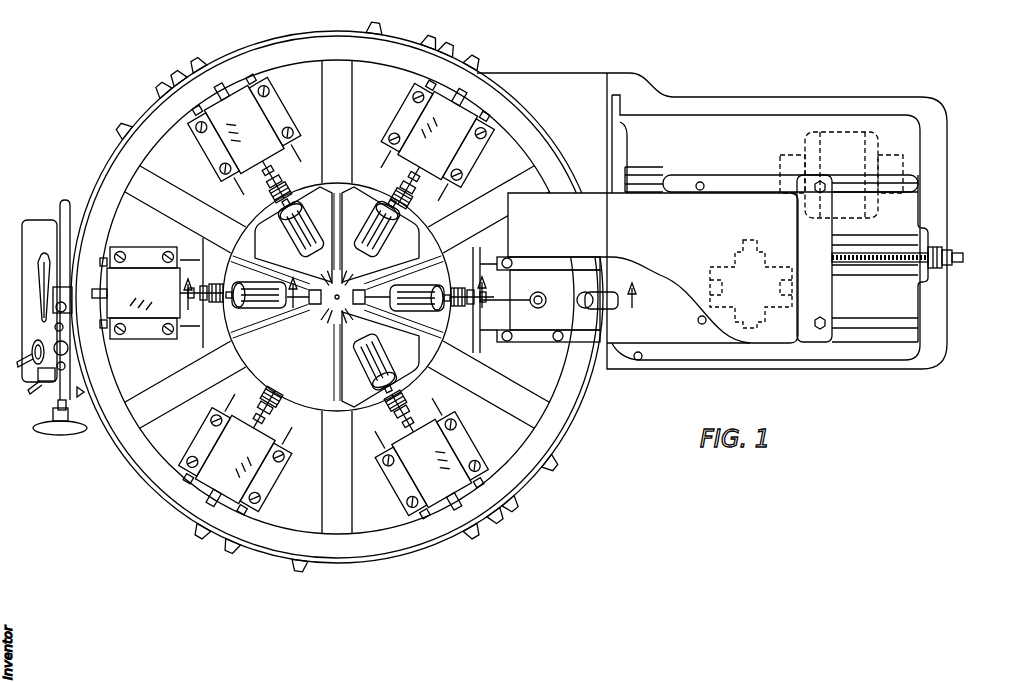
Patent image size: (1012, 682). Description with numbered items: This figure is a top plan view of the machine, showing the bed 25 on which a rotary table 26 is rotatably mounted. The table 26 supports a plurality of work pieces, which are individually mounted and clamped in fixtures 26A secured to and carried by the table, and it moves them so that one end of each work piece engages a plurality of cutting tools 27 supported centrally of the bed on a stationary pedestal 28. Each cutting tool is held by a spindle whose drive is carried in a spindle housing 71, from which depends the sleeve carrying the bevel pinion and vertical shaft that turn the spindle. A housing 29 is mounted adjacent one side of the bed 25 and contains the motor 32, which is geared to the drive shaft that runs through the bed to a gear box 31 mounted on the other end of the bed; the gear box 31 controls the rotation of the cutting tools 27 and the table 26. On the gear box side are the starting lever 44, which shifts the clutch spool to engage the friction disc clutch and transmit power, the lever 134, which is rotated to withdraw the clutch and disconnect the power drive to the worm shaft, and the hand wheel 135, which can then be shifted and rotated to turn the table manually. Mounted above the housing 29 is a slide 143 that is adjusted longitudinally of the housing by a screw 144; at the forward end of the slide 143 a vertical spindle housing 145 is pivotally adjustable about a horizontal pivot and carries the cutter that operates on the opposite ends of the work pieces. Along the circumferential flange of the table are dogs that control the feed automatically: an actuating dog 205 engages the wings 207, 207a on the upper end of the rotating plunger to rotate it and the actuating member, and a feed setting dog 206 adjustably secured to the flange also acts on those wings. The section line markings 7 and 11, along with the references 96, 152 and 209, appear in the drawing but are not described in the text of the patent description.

The bed 25 is at (585, 78).
The table 26 is at (572, 410).
The fixtures 26A is at (223, 141).
The cutting tools 27 is at (268, 170).
The pedestal 28 is at (356, 184).
The housing 29 is at (925, 347).
The gear box 31 is at (42, 225).
The motor 32 is at (858, 146).
The starting lever 44 is at (40, 272).
The spindle housing 71 is at (335, 318).
The knob 96 is at (28, 360).
The lever 134 is at (28, 388).
The hand wheel 135 is at (56, 434).
The slide 143 is at (728, 208).
The screw 144 is at (956, 254).
The vertical spindle housing 145 is at (540, 288).
The valve (hidden) 152 is at (770, 272).
The actuating dog 205 is at (242, 554).
The feed setting dog 206 is at (300, 566).
The wing 207 is at (66, 343).
The wing 207a is at (66, 365).
The roller 209 is at (200, 536).
The section line 7 is at (245, 301).
The section line 11 is at (564, 303).